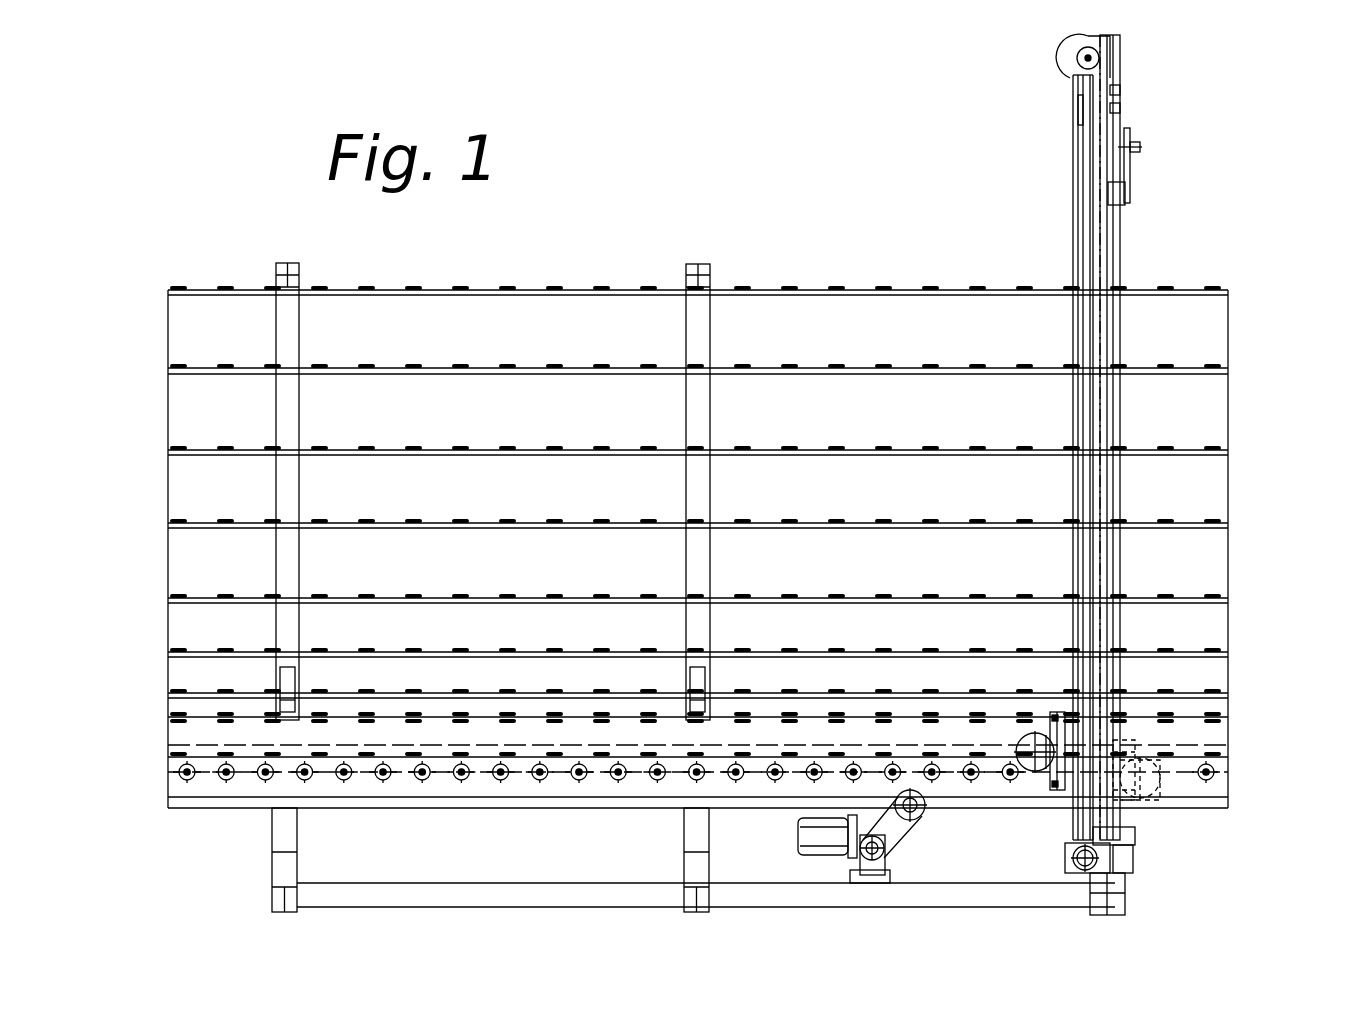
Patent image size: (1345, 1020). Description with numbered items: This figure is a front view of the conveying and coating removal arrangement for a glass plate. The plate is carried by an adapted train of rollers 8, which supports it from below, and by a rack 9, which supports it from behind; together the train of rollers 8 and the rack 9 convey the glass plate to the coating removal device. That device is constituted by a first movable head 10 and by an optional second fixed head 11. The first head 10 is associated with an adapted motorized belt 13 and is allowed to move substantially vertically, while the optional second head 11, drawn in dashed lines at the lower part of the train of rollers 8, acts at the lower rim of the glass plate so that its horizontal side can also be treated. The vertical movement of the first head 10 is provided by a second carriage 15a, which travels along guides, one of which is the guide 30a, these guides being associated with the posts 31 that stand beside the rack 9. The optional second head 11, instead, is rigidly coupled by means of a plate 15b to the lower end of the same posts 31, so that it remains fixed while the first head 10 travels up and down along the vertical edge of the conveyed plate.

The train of rollers 8 is at (146, 748).
The rack 9 is at (192, 398).
The first movable head 10 is at (1033, 781).
The second fixed head 11 is at (1152, 800).
The motorized belt 13 is at (1073, 88).
The second carriage 15a is at (1052, 705).
The plate 15b is at (1142, 735).
The guide 30a is at (1078, 218).
The posts 31 is at (1103, 243).